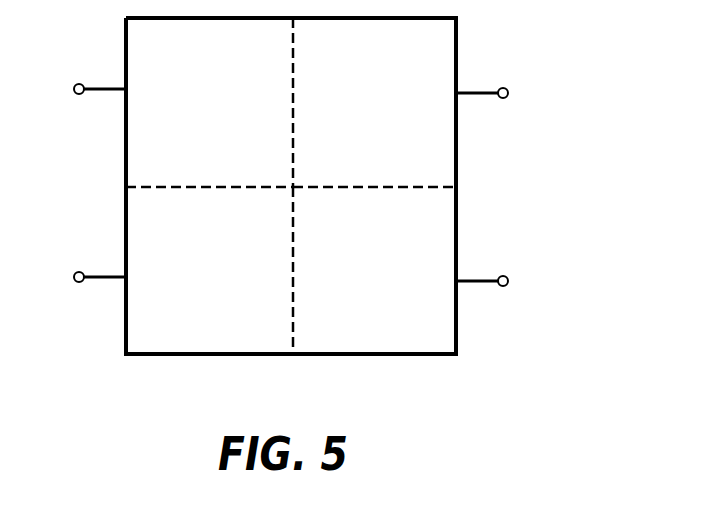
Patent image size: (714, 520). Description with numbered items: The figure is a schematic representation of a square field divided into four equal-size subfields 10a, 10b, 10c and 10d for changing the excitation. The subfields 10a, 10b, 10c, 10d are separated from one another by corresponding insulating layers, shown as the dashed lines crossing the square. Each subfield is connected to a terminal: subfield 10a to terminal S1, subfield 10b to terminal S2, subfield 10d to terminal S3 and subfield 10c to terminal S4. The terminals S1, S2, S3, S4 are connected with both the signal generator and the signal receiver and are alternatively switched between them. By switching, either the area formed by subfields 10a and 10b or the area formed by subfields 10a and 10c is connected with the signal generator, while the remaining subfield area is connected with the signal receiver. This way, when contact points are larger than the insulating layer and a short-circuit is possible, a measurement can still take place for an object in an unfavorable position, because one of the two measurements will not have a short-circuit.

The subfield 10a is at (241, 114).
The subfield 10b is at (393, 114).
The subfield 10c is at (235, 282).
The subfield 10d is at (390, 282).
The terminal S1 is at (83, 90).
The terminal S2 is at (504, 95).
The terminal S3 is at (504, 288).
The terminal S4 is at (83, 281).